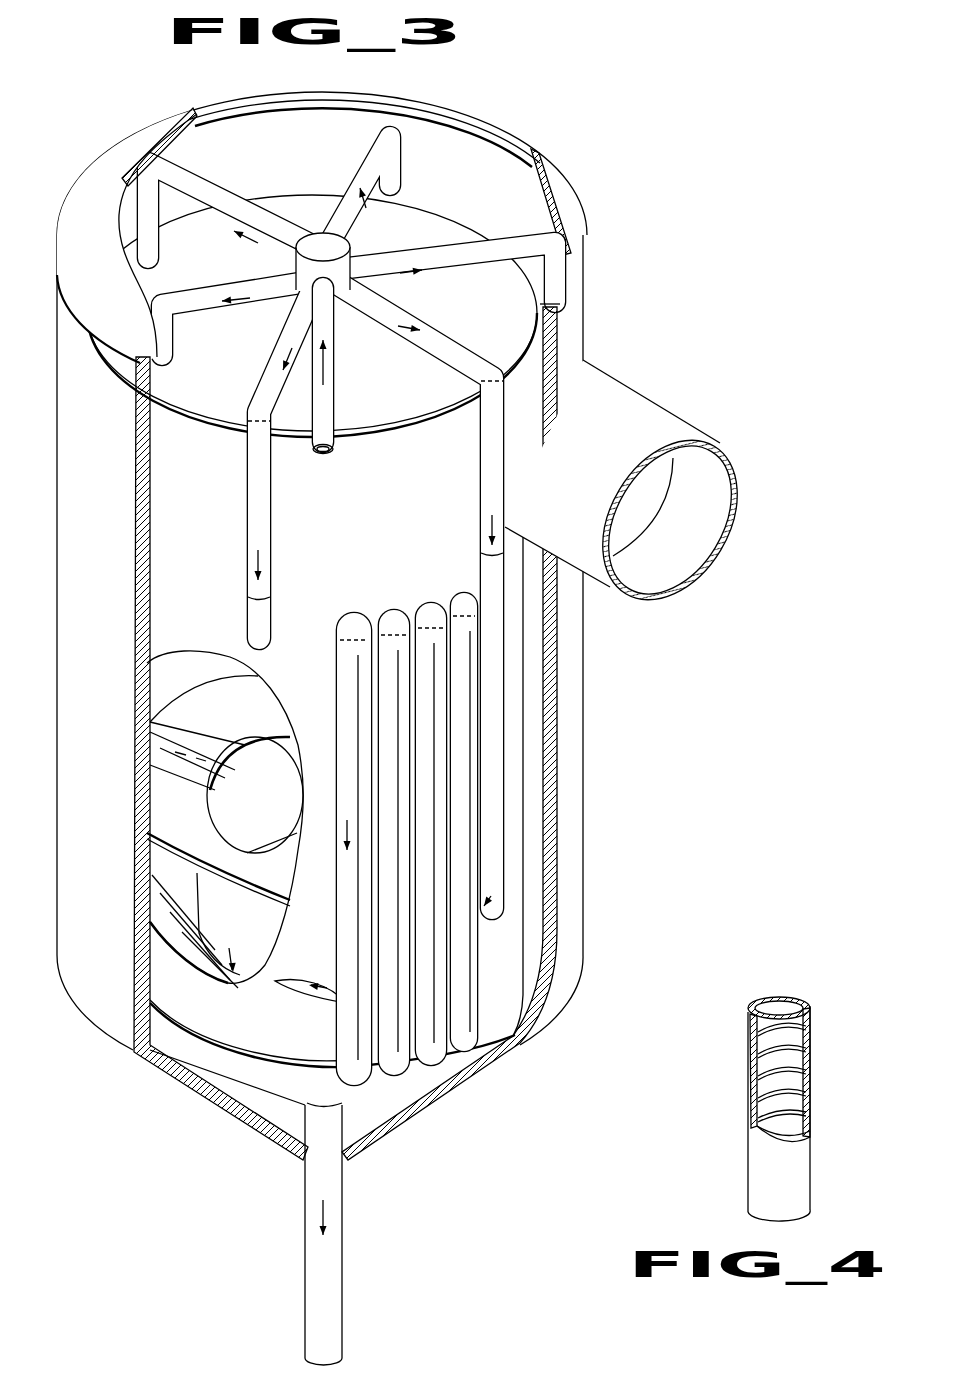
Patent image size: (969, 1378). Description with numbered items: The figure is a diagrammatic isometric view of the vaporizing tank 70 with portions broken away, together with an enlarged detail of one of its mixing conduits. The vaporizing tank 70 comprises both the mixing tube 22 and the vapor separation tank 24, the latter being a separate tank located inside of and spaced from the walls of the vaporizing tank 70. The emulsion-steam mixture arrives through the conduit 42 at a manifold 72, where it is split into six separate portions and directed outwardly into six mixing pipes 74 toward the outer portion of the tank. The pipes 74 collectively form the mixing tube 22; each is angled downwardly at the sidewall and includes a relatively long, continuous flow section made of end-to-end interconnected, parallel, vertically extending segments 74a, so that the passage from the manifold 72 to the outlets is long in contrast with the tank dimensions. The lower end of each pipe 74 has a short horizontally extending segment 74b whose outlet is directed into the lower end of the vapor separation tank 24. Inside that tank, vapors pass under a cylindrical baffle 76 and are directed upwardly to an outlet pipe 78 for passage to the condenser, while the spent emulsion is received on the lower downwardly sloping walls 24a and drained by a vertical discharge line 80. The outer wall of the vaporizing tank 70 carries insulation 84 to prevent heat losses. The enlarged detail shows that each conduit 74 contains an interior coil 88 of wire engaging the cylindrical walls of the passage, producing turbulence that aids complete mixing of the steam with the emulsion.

In FIG. 3, the mixing tube 22 is at (377, 610).
In FIG. 3, the vapor separation tank 24 is at (200, 566).
In FIG. 3, the downwardly sloping walls 24a is at (184, 937).
In FIG. 3, the conduit 42 is at (328, 414).
In FIG. 3, the vaporizing tank 70 is at (592, 318).
In FIG. 3, the manifold 72 is at (340, 247).
In FIG. 3, the mixing pipes 74 is at (345, 209).
In FIG. 4, the mixing pipes 74 is at (755, 1163).
In FIG. 3, the vertically extending segments 74a is at (386, 706).
In FIG. 3, the horizontally extending segment 74b is at (322, 996).
In FIG. 3, the cylindrical baffle 76 is at (187, 816).
In FIG. 3, the outlet pipe 78 is at (610, 390).
In FIG. 3, the vertical discharge line 80 is at (333, 1261).
In FIG. 3, the insulation 84 is at (549, 665).
In FIG. 4, the interior coil 88 is at (796, 1090).